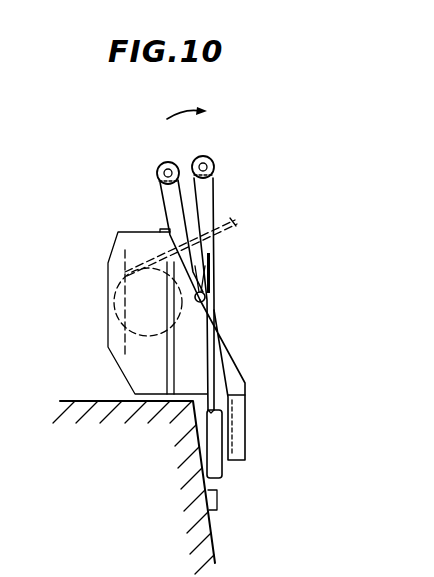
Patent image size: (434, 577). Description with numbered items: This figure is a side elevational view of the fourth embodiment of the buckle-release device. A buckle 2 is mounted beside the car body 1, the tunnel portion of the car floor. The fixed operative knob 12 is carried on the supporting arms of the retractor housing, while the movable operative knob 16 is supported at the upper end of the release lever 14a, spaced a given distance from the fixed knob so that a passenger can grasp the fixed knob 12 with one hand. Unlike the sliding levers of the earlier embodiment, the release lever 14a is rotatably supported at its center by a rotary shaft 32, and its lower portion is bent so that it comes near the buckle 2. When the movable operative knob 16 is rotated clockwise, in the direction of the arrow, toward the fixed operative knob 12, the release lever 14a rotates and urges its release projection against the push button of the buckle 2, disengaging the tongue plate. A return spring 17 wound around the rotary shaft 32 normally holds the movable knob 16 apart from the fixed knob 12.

The car body 1 is at (213, 541).
The buckle 2 is at (214, 471).
The fixed operative knob 12 is at (212, 158).
The release lever 14a is at (228, 340).
The movable operative knob 16 is at (161, 164).
The return spring 17 is at (216, 264).
The rotary shaft 32 is at (206, 294).